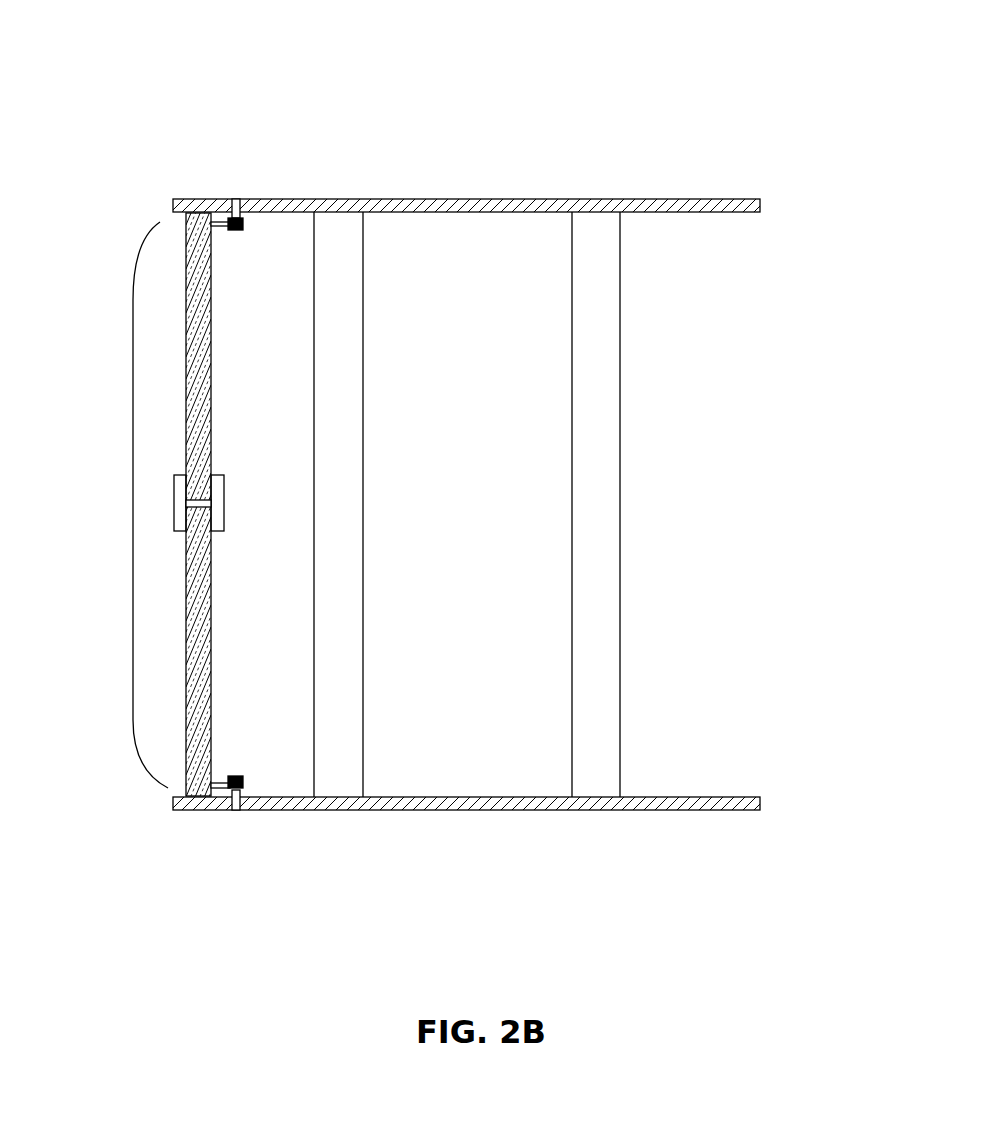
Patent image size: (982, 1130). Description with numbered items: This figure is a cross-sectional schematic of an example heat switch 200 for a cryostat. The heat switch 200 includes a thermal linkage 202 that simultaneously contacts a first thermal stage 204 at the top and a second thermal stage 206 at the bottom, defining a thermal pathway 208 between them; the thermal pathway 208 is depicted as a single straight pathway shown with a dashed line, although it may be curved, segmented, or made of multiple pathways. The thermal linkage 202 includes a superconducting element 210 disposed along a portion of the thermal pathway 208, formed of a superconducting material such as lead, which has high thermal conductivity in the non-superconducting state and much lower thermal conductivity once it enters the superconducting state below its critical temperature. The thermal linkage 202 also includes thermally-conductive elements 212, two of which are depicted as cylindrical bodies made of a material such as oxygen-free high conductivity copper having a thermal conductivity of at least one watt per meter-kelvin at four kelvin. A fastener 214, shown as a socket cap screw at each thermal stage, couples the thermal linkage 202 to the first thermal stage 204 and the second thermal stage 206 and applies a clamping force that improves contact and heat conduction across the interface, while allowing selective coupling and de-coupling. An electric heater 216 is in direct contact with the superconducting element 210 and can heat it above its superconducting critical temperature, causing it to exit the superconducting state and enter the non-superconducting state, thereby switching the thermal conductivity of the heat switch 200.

The heat switch 200 is at (716, 62).
The thermal linkage 202 is at (161, 519).
The first thermal stage 204 is at (750, 199).
The second thermal stage 206 is at (760, 800).
The thermal pathway 208 is at (197, 673).
The superconducting element 210 is at (176, 505).
The thermally-conductive element 212 is at (212, 391).
The fastener 214 is at (237, 230).
The electric heater 216 is at (224, 489).